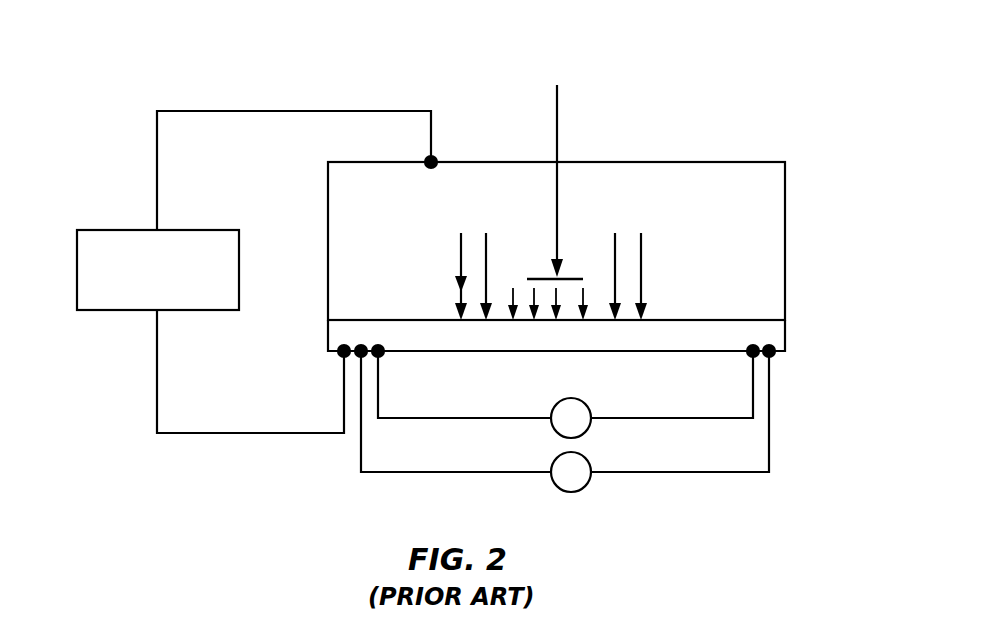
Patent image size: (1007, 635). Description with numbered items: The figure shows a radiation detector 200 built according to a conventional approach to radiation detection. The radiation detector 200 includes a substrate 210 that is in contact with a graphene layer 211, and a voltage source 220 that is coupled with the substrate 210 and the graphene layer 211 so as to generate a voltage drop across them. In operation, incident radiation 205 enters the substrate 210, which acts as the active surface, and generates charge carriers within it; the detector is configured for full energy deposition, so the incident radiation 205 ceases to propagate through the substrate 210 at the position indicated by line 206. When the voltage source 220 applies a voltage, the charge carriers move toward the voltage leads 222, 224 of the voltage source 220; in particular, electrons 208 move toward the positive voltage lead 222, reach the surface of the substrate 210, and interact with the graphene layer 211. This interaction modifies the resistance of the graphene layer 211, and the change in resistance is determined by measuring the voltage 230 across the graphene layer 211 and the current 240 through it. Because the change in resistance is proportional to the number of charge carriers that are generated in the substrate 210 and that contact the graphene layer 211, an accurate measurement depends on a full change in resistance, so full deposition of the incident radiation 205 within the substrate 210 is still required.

The radiation detector 200 is at (707, 80).
The incident radiation 205 is at (557, 133).
The line 206 is at (538, 277).
The electrons 208 is at (486, 265).
The substrate 210 is at (403, 210).
The graphene layer 211 is at (787, 330).
The voltage source 220 is at (105, 229).
The positive voltage lead 222 is at (340, 404).
The voltage lead 224 is at (433, 142).
The voltage 230 is at (587, 482).
The current 240 is at (588, 411).